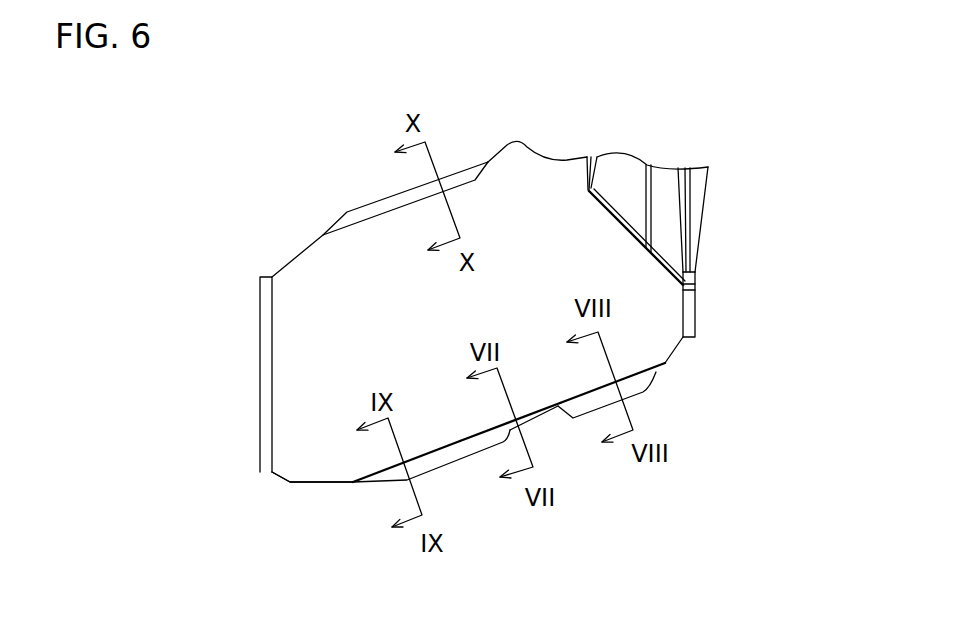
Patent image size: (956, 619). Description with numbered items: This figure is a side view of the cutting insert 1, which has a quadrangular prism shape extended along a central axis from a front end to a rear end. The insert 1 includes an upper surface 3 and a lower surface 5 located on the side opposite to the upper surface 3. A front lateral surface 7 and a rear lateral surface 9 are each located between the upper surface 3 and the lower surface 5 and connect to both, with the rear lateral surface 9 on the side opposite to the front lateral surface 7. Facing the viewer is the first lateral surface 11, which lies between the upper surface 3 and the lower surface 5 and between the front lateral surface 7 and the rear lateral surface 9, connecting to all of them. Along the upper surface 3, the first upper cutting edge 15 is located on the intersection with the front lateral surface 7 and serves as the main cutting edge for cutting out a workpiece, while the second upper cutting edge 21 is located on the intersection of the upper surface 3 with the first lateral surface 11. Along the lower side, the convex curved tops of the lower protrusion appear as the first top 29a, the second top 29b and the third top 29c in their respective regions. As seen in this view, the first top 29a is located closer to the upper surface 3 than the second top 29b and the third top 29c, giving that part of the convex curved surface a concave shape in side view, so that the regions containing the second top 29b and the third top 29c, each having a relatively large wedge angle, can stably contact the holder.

The insert 1 is at (315, 183).
The upper surface 3 is at (522, 138).
The lower surface 5 is at (330, 483).
The front lateral surface 7 is at (702, 243).
The rear lateral surface 9 is at (260, 372).
The first lateral surface 11 is at (337, 313).
The first upper cutting edge 15 is at (708, 167).
The second upper cutting edge 21 is at (686, 168).
The first top 29a is at (545, 420).
The second top 29b is at (657, 382).
The third top 29c is at (443, 467).